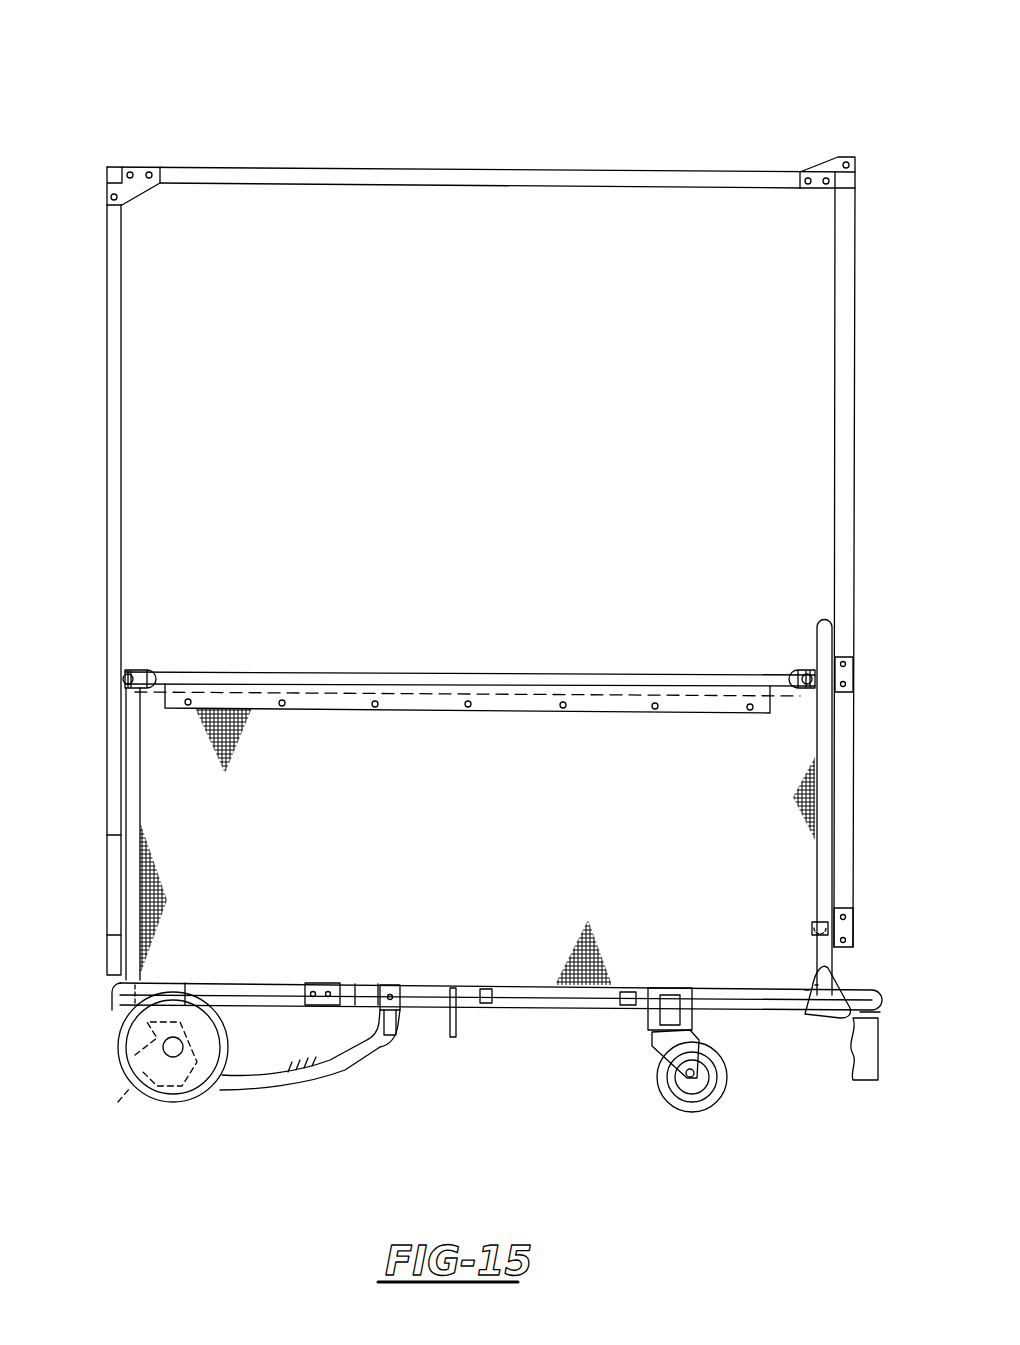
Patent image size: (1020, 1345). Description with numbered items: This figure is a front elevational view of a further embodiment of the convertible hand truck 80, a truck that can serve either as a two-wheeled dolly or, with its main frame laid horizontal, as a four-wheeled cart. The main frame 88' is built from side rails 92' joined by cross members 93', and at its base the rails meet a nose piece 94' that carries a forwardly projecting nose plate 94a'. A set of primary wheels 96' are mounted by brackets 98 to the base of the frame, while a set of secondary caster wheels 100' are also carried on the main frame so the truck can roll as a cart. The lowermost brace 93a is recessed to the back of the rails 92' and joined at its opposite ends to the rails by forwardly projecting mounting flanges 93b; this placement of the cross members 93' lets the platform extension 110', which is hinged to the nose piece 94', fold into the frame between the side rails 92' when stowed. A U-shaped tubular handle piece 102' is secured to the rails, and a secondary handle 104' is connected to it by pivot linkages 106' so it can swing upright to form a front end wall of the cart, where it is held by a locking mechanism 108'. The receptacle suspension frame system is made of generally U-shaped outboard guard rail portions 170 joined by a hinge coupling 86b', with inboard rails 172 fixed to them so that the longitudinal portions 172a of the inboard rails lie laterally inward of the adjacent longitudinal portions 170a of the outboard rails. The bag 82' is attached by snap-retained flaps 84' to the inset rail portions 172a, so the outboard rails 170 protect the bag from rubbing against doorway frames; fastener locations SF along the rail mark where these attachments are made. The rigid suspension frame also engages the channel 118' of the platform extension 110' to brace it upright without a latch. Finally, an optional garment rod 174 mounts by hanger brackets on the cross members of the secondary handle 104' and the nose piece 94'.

The convertible hand truck 80 is at (250, 115).
The garment rod 174 is at (678, 170).
The receptacle or bag 82' is at (116, 590).
The secondary handle 104' is at (867, 583).
The snap-retained flaps 84' is at (470, 644).
The outboard guard rail portions 170 is at (156, 676).
The longitudinal portions of outboard rails 170a is at (418, 678).
The inboard rails 172 is at (165, 688).
The longitudinal portions of inboard rails 172a is at (507, 698).
The shelf fastener holes SF is at (563, 708).
The hinge coupling 86b' is at (468, 604).
The channel 118' is at (485, 720).
The platform extension 110' is at (96, 834).
The nose plate 94a' is at (477, 846).
The handle piece 102' is at (501, 956).
The main frame 88' is at (601, 1054).
The nose piece 94' is at (121, 1016).
The mounting flanges 93b is at (320, 982).
The lowermost brace 93a is at (320, 1010).
The cross members 93' is at (566, 992).
The side rails 92' is at (331, 1065).
The primary wheels 96' is at (164, 1089).
The brackets 98 is at (135, 1086).
The secondary caster wheels 100' is at (742, 1069).
The locking mechanism 108' is at (818, 1028).
The pivot linkages 106' is at (884, 986).